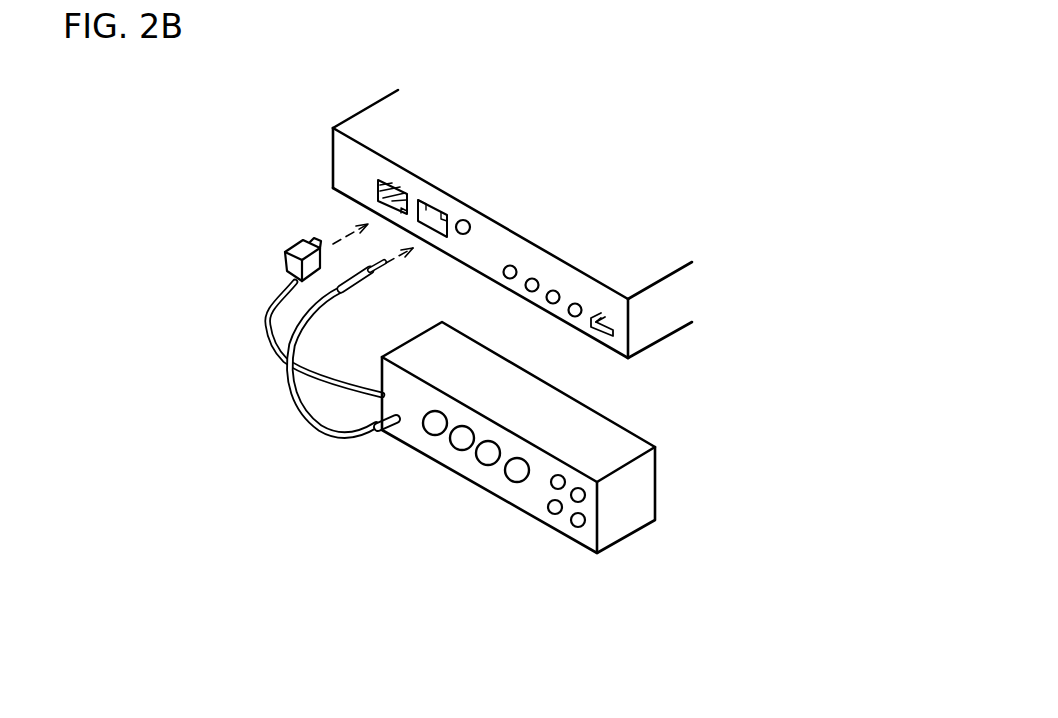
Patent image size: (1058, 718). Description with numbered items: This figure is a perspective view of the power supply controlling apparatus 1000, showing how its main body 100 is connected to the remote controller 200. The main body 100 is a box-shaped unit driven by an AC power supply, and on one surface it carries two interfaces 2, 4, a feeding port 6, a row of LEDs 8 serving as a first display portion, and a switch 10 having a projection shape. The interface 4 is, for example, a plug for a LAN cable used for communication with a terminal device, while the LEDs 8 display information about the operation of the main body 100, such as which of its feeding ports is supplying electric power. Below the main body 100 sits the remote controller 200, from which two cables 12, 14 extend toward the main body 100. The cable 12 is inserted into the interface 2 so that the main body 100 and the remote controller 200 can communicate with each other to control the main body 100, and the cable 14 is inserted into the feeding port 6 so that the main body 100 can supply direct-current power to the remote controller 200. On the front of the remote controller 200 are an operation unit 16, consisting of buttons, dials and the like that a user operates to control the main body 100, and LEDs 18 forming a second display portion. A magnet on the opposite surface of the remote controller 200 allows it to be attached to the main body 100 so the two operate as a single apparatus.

The power supply controlling apparatus 1000 is at (812, 237).
The main body 100 is at (365, 108).
The interface (I/F) 2 is at (378, 180).
The interface (I/F) 4 is at (430, 203).
The feeding port 6 is at (466, 220).
The LEDs (first display portion) 8 is at (577, 303).
The switch 10 is at (613, 331).
The cable 12 is at (265, 316).
The cable 14 is at (288, 382).
The remote controller 200 is at (658, 498).
The operation unit 16 is at (503, 487).
The LEDs (second display portion) 18 is at (548, 491).